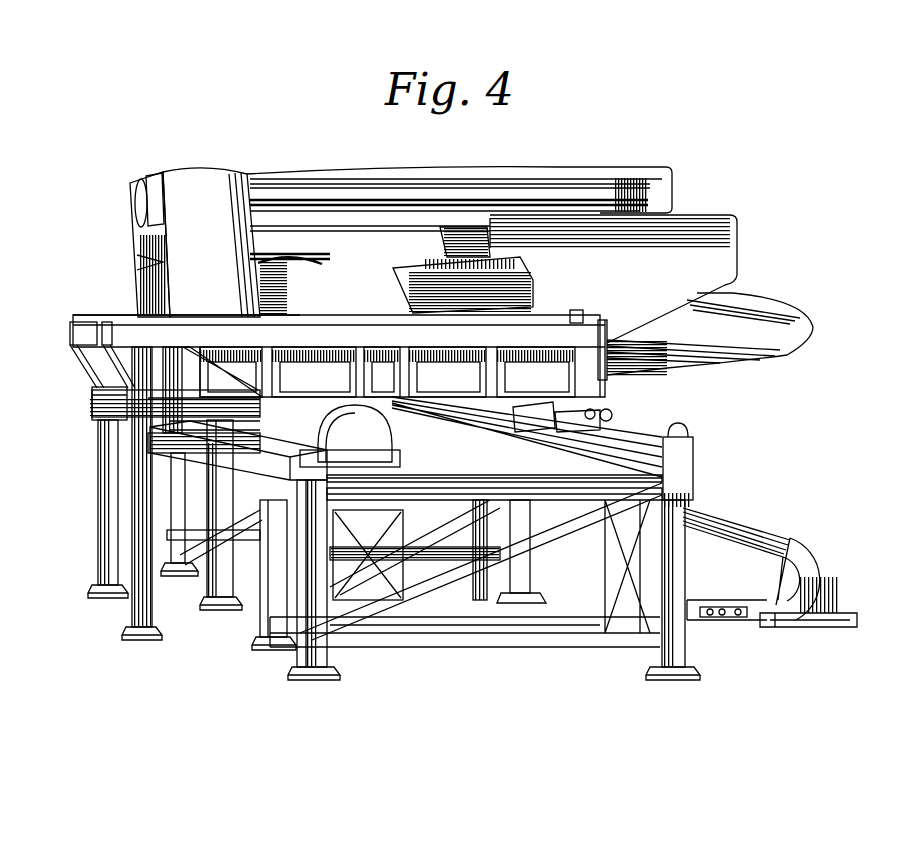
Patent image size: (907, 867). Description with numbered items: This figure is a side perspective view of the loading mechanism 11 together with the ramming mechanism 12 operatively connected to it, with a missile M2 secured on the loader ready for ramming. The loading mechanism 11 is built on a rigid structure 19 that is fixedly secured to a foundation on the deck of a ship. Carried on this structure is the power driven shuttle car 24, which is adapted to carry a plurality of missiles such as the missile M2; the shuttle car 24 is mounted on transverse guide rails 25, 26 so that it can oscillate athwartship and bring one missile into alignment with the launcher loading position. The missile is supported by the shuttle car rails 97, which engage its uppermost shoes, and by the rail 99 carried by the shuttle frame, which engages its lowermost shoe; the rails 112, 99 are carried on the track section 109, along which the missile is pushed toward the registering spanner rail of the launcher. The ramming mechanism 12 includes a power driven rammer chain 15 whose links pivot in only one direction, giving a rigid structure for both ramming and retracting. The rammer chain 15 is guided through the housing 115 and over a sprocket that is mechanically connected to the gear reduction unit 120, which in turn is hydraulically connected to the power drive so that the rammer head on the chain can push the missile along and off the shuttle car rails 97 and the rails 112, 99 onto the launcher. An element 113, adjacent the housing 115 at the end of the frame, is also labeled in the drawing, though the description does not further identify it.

The rail 112 is at (92, 320).
The track section 109 is at (113, 314).
The shuttle car rail 97 is at (372, 313).
The rail 99 is at (206, 391).
The loading mechanism 11 is at (90, 424).
The transverse guide rail 26 is at (293, 448).
The gear reduction unit 120 is at (378, 431).
The shuttle car 24 is at (598, 388).
The transverse guide rail 25 is at (622, 432).
The support post head 113 is at (691, 440).
The housing 115 is at (730, 522).
The ramming mechanism 12 is at (807, 542).
The rammer chain 15 is at (722, 605).
The rigid structure 19 is at (207, 578).
The missile M2 is at (748, 333).